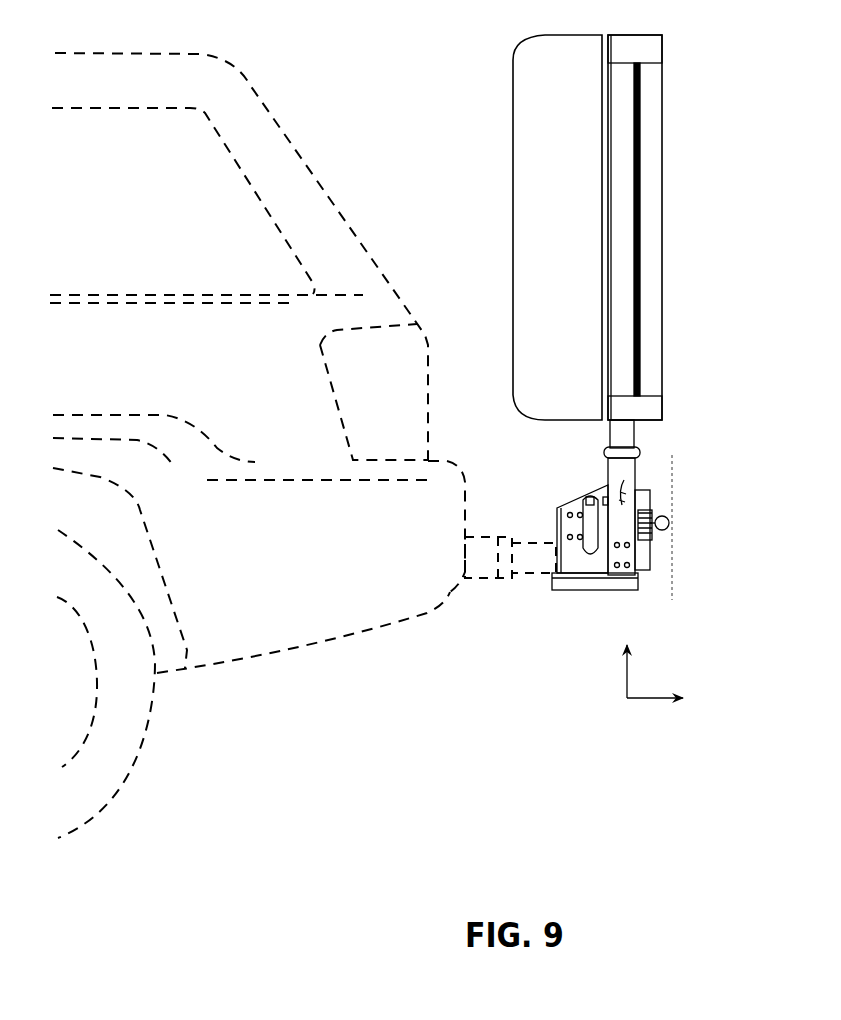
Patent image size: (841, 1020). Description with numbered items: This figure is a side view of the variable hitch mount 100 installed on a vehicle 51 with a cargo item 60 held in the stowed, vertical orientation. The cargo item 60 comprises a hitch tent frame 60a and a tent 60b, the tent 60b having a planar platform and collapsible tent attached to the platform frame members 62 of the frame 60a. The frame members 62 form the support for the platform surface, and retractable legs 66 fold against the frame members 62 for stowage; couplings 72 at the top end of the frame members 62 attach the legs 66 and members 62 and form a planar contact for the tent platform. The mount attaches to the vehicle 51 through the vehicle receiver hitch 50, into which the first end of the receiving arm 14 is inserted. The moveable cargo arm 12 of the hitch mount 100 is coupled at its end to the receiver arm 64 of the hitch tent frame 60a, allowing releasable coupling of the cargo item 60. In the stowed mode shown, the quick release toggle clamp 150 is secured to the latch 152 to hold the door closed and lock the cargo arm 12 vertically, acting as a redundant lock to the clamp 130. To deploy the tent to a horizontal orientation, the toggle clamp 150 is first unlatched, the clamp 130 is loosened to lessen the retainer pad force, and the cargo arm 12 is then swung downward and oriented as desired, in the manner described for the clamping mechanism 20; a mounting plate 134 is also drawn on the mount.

The moveable cargo arm 12 is at (637, 467).
The receiving arm 14 is at (540, 540).
The clamping mechanism 20 is at (682, 562).
The vehicle receiver hitch 50 is at (510, 581).
The vehicle 51 is at (365, 247).
The cargo item 60 is at (733, 298).
The hitch tent frame 60a is at (683, 102).
The tent 60b is at (470, 102).
The platform frame members 62 is at (626, 187).
The receiver arm 64 is at (636, 435).
The retractable legs 66 is at (662, 262).
The coupling 72 is at (664, 52).
The variable hitch mount 100 is at (742, 642).
The clamp 130 is at (588, 487).
The bracket plate 134 is at (572, 500).
The quick release toggle clamp 150 is at (672, 522).
The latch 152 is at (601, 233).